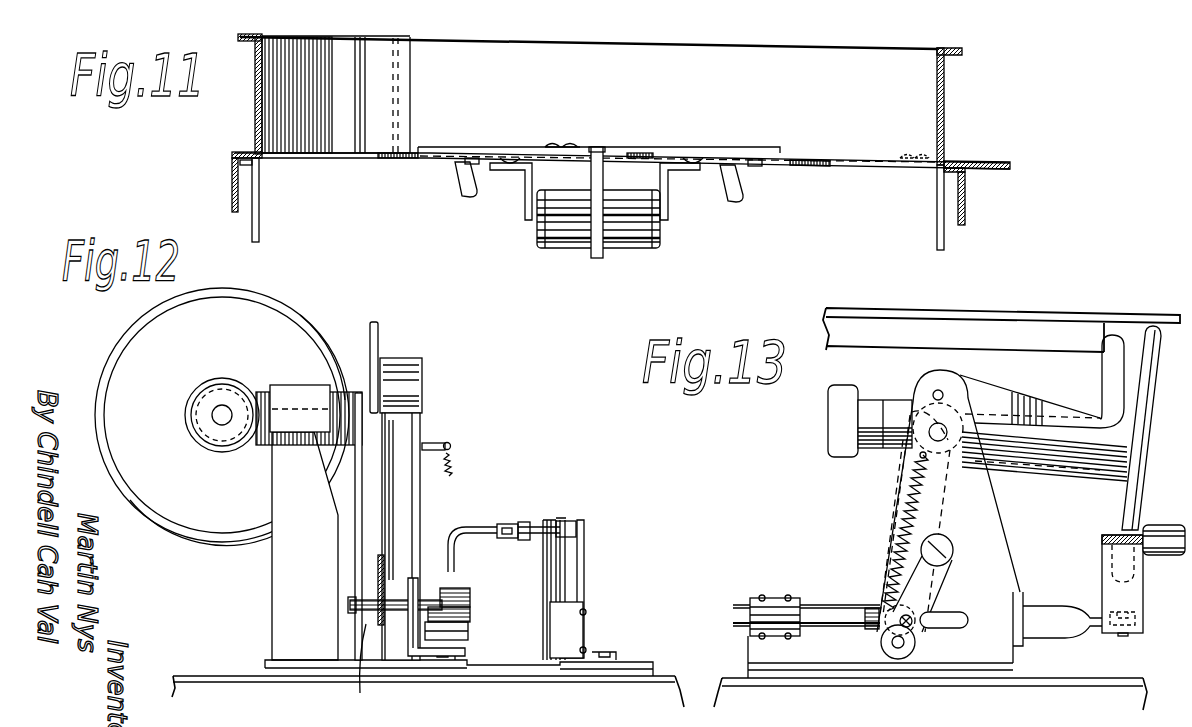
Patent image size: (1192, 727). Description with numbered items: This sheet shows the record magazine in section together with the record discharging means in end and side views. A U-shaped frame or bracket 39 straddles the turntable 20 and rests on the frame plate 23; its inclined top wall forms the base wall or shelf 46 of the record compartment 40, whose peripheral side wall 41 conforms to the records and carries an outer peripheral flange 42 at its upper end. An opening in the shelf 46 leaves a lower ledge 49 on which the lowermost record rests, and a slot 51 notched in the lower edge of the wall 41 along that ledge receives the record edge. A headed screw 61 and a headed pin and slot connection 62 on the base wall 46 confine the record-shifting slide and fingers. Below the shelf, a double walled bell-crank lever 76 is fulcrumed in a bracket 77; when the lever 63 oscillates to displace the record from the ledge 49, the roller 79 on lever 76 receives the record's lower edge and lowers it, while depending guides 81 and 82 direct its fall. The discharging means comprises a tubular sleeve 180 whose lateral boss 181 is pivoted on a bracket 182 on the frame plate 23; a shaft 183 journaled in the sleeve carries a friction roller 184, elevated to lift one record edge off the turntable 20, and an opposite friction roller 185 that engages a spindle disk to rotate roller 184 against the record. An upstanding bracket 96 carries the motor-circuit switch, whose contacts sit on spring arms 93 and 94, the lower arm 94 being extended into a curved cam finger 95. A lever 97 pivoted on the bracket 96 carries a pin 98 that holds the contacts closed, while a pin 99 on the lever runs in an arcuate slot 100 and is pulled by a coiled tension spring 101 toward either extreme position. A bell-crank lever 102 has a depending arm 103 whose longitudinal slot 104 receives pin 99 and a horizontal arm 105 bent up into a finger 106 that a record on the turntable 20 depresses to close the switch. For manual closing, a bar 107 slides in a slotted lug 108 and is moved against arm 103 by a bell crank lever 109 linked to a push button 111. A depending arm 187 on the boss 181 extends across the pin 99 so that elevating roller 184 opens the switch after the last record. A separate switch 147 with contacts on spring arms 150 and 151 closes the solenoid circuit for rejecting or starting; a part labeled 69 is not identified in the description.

In FIG. 11, the record compartment 40 is at (603, 50).
In FIG. 11, the outer peripheral flange 42 is at (241, 95).
In FIG. 11, the peripheral side wall 41 is at (257, 86).
In FIG. 11, the base wall or shelf 46 is at (238, 151).
In FIG. 11, the frame or bracket 39 is at (232, 190).
In FIG. 11, the depending guides 81 is at (262, 201).
In FIG. 11, the depending guides 82 is at (463, 187).
In FIG. 11, the slot 51 is at (503, 152).
In FIG. 11, the lower ledge 49 is at (790, 163).
In FIG. 11, the headed screw 61 is at (570, 143).
In FIG. 11, the headed pin and slot connection 62 is at (906, 150).
In FIG. 11, the bracket 77 is at (670, 208).
In FIG. 11, the double walled bell-crank lever 76 is at (665, 233).
In FIG. 11, the roller 79 is at (559, 240).
In FIG. 11, the lever 63 is at (597, 259).
In FIG. 12, the friction roller 184 is at (255, 296).
In FIG. 13, the friction roller 184 is at (1149, 398).
In FIG. 12, the friction roller 185 is at (204, 384).
In FIG. 13, the friction roller 185 is at (835, 421).
In FIG. 12, the shaft 183 is at (216, 421).
In FIG. 12, the bracket 182 is at (278, 578).
In FIG. 12, the lateral boss 181 is at (260, 392).
In FIG. 12, the depending arm 187 is at (353, 517).
In FIG. 13, the depending arm 187 is at (890, 572).
In FIG. 12, the finger 106 is at (375, 323).
In FIG. 13, the finger 106 is at (1102, 377).
In FIG. 12, the bell-crank lever 102 is at (384, 359).
In FIG. 12, the upstanding bracket 96 is at (418, 494).
In FIG. 13, the upstanding bracket 96 is at (998, 563).
In FIG. 12, the depending arm 103 is at (388, 489).
In FIG. 13, the depending arm 103 is at (903, 476).
In FIG. 12, the coiled tension spring 101 is at (452, 468).
In FIG. 13, the coiled tension spring 101 is at (915, 500).
In FIG. 12, the longitudinal slot 104 is at (384, 598).
In FIG. 12, the slotted lug 108 is at (408, 638).
In FIG. 13, the slotted lug 108 is at (1025, 593).
In FIG. 12, the spring arm 93 is at (468, 598).
In FIG. 13, the spring arm 93 is at (812, 598).
In FIG. 12, the spring arm 94 is at (468, 621).
In FIG. 13, the spring arm 94 is at (817, 629).
In FIG. 12, the pin 98 is at (468, 635).
In FIG. 13, the pin 98 is at (897, 647).
In FIG. 12, the pin 99 is at (358, 669).
In FIG. 13, the pin 99 is at (926, 622).
In FIG. 12, the lever 97 is at (452, 540).
In FIG. 13, the lever 97 is at (944, 582).
In FIG. 12, the bell crank lever 109 is at (483, 527).
In FIG. 13, the bell crank lever 109 is at (1140, 588).
In FIG. 12, the spring arm 150 is at (552, 568).
In FIG. 12, the switch 147 is at (562, 520).
In FIG. 12, the spring arm 151 is at (578, 568).
In FIG. 13, the turntable 20 is at (878, 338).
In FIG. 13, the tubular sleeve 180 is at (1062, 463).
In FIG. 13, the substantially horizontal arm 105 is at (1027, 391).
In FIG. 13, the curved cam finger 95 is at (915, 648).
In FIG. 13, the arcuate slot 100 is at (953, 612).
In FIG. 13, the block 69 is at (865, 619).
In FIG. 13, the bar 107 is at (1055, 612).
In FIG. 13, the push button 111 is at (1168, 525).
In FIG. 13, the frame plate 23 is at (722, 678).